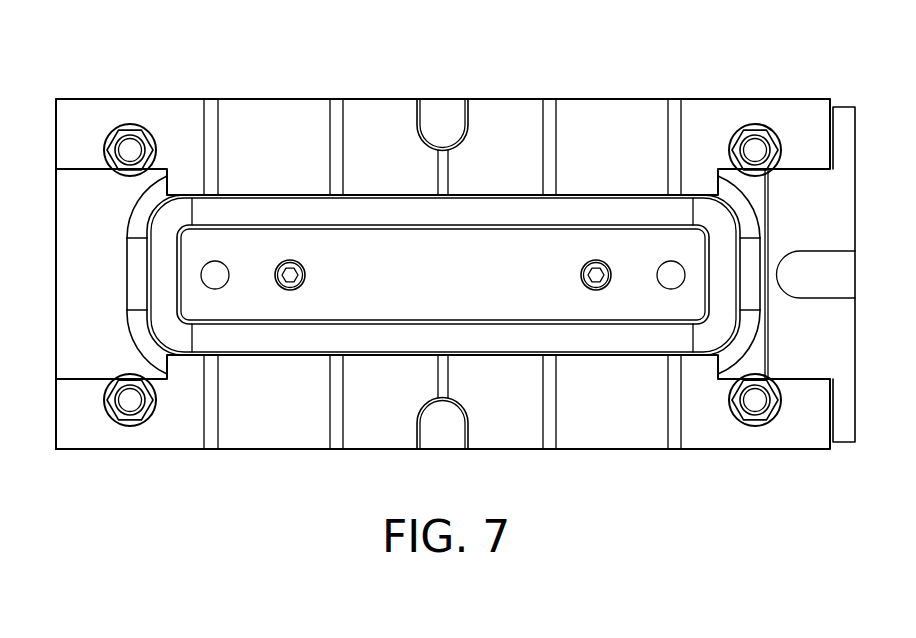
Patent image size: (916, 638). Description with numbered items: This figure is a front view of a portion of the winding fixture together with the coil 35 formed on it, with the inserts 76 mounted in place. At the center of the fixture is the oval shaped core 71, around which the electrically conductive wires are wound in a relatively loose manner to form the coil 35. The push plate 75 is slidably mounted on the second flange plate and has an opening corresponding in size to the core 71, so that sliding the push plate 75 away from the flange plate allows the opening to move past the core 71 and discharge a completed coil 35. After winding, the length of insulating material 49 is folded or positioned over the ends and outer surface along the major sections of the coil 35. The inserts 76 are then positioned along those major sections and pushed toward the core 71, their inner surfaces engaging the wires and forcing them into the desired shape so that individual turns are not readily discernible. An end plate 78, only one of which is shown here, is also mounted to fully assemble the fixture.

The coil 35 is at (289, 210).
The length of insulating material 49 is at (380, 210).
The core 71 is at (448, 286).
The push plate 75 is at (157, 177).
The inserts 76 is at (617, 127).
The end plates 78 is at (830, 193).